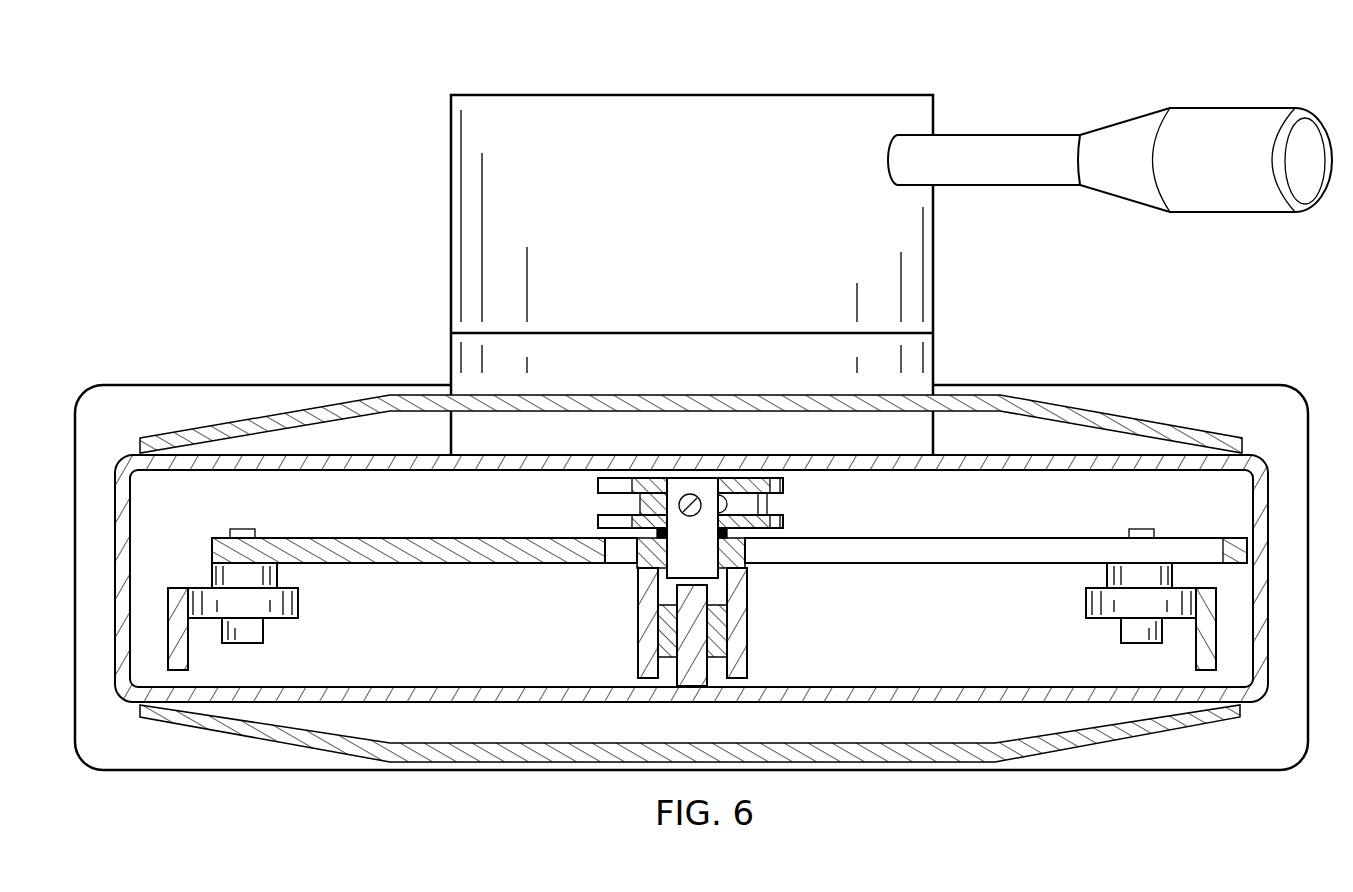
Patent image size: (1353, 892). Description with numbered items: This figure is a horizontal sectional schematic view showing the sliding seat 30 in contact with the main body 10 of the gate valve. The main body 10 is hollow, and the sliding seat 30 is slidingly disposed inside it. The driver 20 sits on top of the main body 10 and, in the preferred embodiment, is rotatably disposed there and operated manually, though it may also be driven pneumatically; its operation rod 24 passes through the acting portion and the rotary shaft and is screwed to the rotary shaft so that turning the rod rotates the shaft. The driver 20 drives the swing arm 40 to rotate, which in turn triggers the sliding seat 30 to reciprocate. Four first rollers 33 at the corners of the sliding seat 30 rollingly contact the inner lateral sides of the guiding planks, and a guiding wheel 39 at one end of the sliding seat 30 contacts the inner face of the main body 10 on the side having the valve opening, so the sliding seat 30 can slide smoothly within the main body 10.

The main body 10 is at (355, 385).
The driver 20 is at (426, 188).
The operation rod 24 is at (1025, 143).
The sliding seat 30 is at (203, 537).
The first roller 33 is at (208, 612).
The guiding wheel 39 is at (690, 676).
The swing arm 40 is at (800, 503).